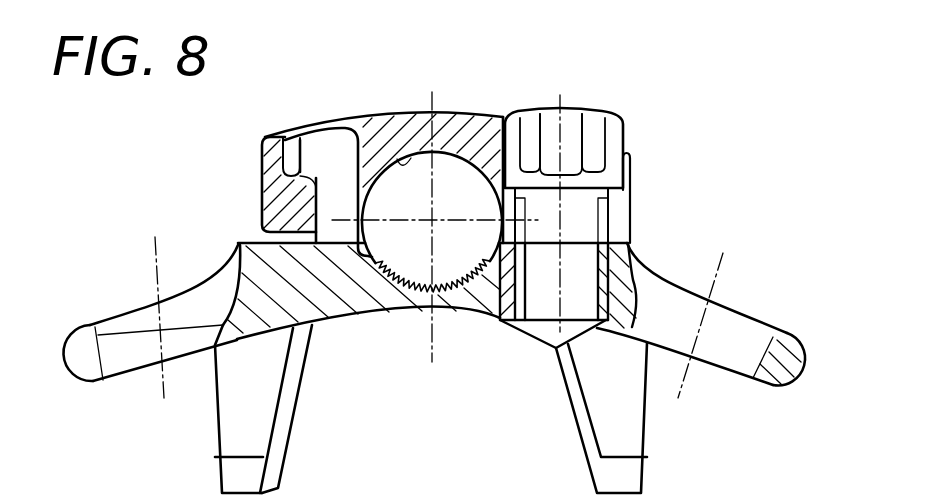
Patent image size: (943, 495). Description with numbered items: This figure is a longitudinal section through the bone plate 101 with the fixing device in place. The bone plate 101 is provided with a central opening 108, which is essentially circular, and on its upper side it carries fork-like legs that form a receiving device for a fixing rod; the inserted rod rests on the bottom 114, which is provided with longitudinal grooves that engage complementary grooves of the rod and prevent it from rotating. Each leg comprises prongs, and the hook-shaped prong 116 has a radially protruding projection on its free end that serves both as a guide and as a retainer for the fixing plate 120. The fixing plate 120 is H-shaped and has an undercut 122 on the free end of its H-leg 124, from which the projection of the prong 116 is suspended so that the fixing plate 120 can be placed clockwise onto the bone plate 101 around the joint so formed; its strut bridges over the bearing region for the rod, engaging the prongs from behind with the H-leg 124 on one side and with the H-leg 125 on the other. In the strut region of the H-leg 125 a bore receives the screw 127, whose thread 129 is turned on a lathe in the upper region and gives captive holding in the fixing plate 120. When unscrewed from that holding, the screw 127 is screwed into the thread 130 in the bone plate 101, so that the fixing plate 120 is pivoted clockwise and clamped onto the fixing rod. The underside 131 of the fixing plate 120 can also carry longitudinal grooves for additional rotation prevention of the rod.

The bone plate 101 is at (789, 382).
The central opening 108 is at (478, 297).
The bottom 114 is at (399, 292).
The prong 116 is at (322, 150).
The fixing plate 120 is at (471, 108).
The undercut 122 is at (290, 147).
The H-leg 124 is at (300, 170).
The H-leg 125 is at (613, 203).
The screw 127 is at (592, 137).
The thread 129 is at (600, 272).
The thread 130 is at (636, 265).
The underside 131 is at (395, 162).